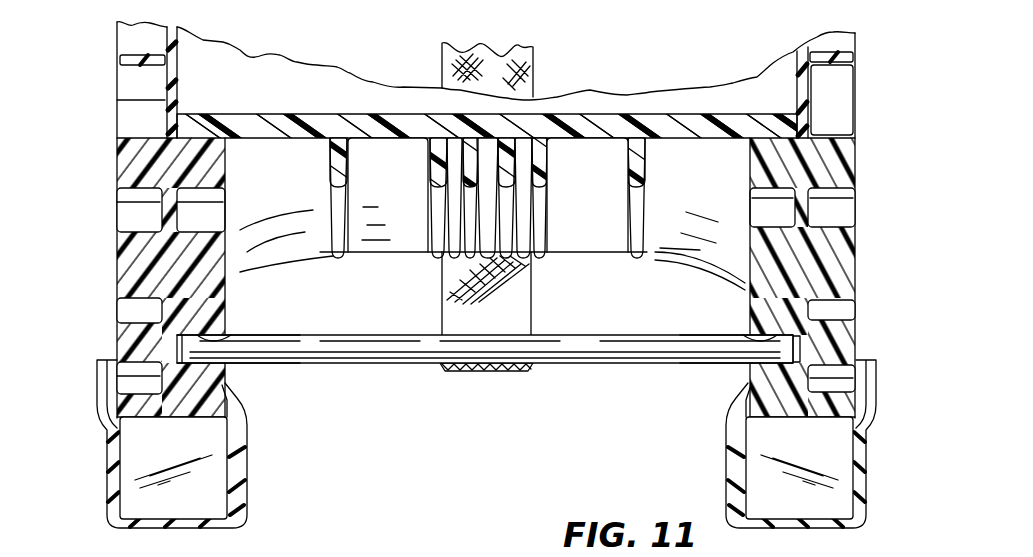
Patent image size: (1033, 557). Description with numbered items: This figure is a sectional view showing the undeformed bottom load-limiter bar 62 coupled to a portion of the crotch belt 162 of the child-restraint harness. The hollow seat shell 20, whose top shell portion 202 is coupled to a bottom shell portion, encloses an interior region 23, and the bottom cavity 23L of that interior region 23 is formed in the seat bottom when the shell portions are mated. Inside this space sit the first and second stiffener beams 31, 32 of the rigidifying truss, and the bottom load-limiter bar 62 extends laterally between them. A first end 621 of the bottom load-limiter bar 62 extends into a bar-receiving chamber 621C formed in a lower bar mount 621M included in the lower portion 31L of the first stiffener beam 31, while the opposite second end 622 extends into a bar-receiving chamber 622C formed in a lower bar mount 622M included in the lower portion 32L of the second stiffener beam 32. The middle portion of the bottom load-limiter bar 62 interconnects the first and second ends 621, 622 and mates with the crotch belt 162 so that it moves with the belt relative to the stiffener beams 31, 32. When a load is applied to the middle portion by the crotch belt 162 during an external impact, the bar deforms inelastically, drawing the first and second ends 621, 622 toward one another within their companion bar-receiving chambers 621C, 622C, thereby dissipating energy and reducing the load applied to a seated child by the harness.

The crotch belt 162 is at (537, 67).
The lower portion of second stiffener beam 32L is at (857, 138).
The lower portion of first stiffener beam 31L is at (113, 228).
The second stiffener beam 32 is at (857, 240).
The first stiffener beam 31 is at (110, 293).
The interior region 23 is at (273, 298).
The bottom cavity 23L is at (640, 295).
The bar-receiving chamber 621C is at (232, 340).
The bar-receiving chamber 622C is at (742, 337).
The first end 621 is at (200, 363).
The second end 622 is at (785, 353).
The bottom load-limiter bar 62 is at (571, 367).
The lower bar mount 621M is at (173, 393).
The lower bar mount 622M is at (793, 395).
The top shell portion 202 is at (237, 534).
The hollow seat shell 20 is at (762, 531).